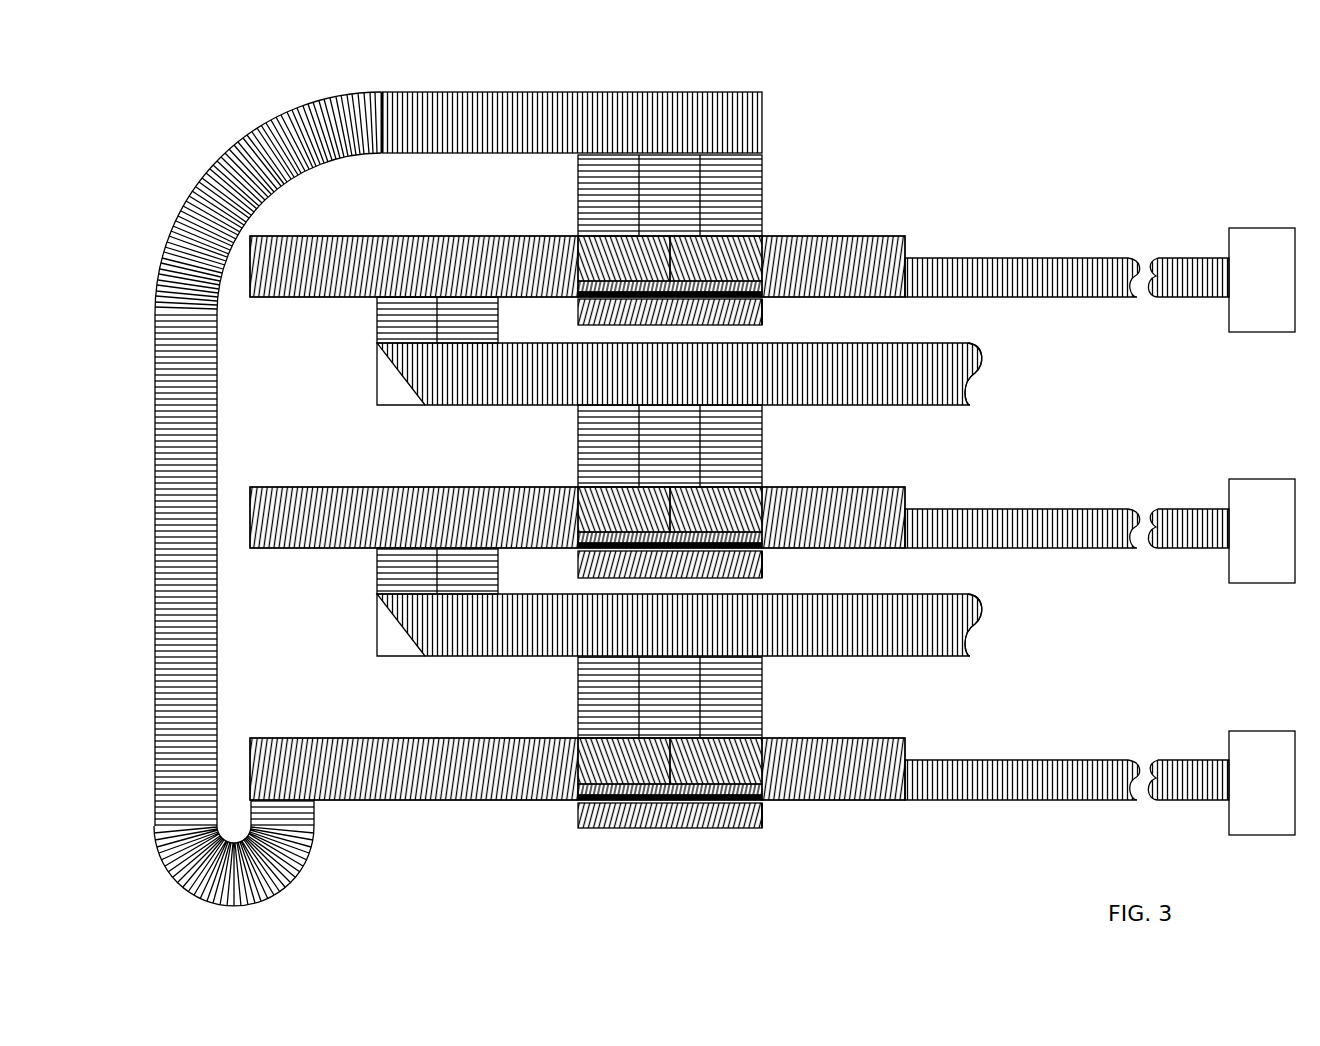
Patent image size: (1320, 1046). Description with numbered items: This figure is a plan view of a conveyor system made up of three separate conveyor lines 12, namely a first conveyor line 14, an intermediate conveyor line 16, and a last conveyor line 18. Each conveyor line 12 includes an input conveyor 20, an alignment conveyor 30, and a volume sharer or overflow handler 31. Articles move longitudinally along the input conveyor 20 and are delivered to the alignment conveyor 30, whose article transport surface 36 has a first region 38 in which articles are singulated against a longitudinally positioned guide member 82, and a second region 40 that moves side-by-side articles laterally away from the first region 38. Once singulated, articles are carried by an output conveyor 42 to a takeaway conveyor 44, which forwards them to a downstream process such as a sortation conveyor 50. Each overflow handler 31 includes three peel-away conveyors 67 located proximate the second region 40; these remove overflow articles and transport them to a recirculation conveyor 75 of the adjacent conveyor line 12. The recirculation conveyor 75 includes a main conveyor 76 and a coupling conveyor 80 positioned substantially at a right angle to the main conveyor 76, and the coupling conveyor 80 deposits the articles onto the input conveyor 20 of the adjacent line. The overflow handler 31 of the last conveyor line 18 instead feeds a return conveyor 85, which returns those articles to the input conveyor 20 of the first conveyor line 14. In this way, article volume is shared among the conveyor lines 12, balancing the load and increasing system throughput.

The conveyor line 12 is at (363, 206).
The first conveyor line 14 is at (393, 800).
The intermediate conveyor line 16 is at (308, 487).
The last conveyor line 18 is at (311, 236).
The input conveyor 20 is at (476, 240).
The alignment conveyor 30 is at (762, 310).
The overflow handler 31 is at (812, 199).
The article transport surface 36 is at (630, 265).
The first region 38 is at (590, 560).
The second region 40 is at (745, 517).
The output conveyor 42 is at (905, 243).
The takeaway conveyor 44 is at (1010, 273).
The sortation conveyor 50 is at (1278, 332).
The peel-away conveyor 67 is at (610, 181).
The recirculation conveyor 75 is at (980, 360).
The main conveyor 76 is at (883, 345).
The coupling conveyor 80 is at (377, 332).
The guide member 82 is at (590, 312).
The return conveyor 85 is at (676, 92).